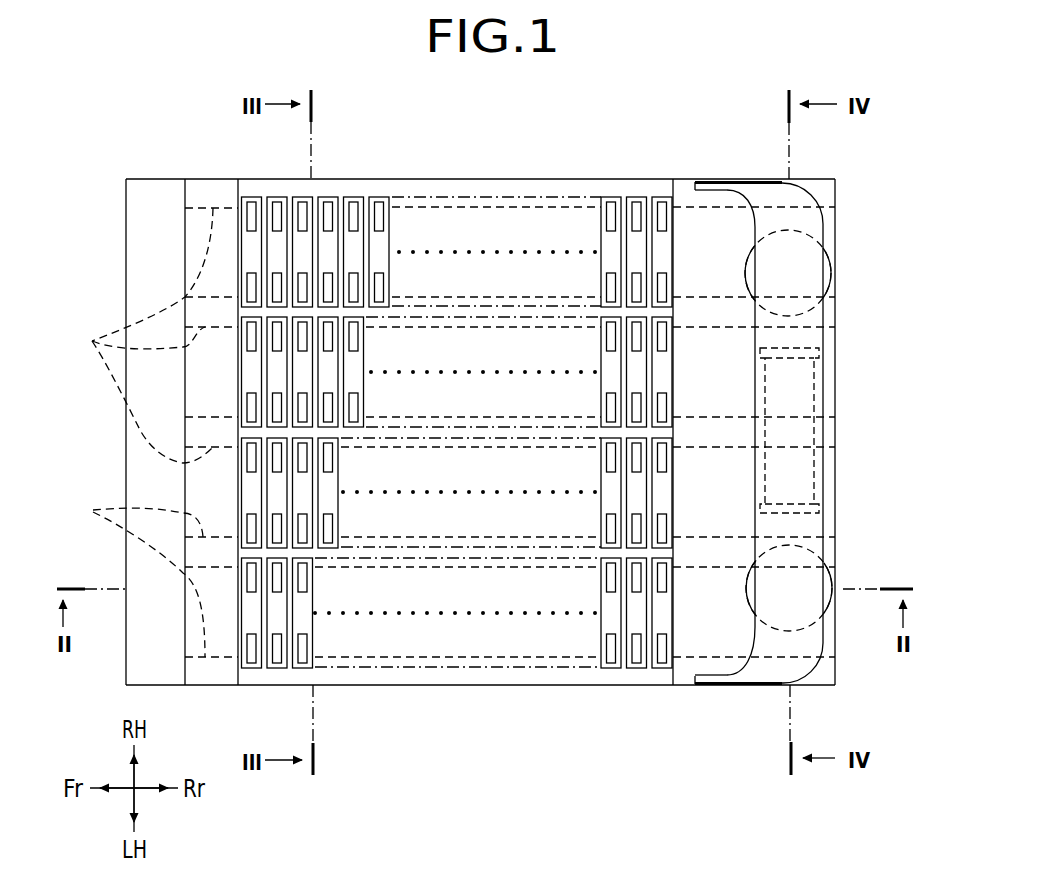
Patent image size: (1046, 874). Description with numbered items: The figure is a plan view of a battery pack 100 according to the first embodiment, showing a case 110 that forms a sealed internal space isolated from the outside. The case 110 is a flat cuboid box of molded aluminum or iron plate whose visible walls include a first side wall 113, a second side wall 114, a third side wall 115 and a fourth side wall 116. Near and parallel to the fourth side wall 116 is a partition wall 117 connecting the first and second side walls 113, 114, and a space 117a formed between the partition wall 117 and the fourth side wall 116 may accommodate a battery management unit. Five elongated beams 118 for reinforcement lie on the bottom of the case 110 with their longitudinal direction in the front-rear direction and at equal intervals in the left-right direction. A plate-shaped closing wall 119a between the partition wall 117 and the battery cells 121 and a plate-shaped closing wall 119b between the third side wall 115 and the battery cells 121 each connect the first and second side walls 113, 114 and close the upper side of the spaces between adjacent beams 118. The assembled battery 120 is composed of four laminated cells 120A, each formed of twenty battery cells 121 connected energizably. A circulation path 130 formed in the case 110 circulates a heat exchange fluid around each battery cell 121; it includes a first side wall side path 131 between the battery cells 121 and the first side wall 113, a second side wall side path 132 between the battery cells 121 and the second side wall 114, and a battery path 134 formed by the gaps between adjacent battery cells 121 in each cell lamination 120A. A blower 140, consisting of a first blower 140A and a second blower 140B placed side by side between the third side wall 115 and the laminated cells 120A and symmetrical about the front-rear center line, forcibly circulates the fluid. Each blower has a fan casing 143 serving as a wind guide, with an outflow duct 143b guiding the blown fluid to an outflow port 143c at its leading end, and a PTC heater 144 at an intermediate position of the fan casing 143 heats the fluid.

The battery pack 100 is at (160, 178).
The case 110 is at (197, 178).
The first side wall 113 is at (379, 686).
The second side wall 114 is at (340, 178).
The third side wall 115 is at (836, 231).
The fourth side wall 116 is at (126, 225).
The partition wall 117 is at (183, 258).
The space 117a is at (150, 290).
The beams 118 is at (104, 516).
The closing wall 119a is at (197, 485).
The closing wall 119b is at (738, 473).
The assembled battery 120 is at (458, 394).
The laminated cells 120A is at (433, 196).
The battery cells 121 is at (607, 240).
The circulation path 130 is at (448, 674).
The first side wall side path 131 is at (523, 674).
The second side wall side path 132 is at (520, 185).
The battery path 134 is at (622, 243).
The blower 140 is at (847, 430).
The first blower 140A is at (836, 574).
The second blower 140B is at (880, 288).
The fan casing 143 is at (787, 428).
The outflow duct 143b is at (749, 190).
The outflow port 143c is at (692, 183).
The PTC heater 144 is at (819, 377).